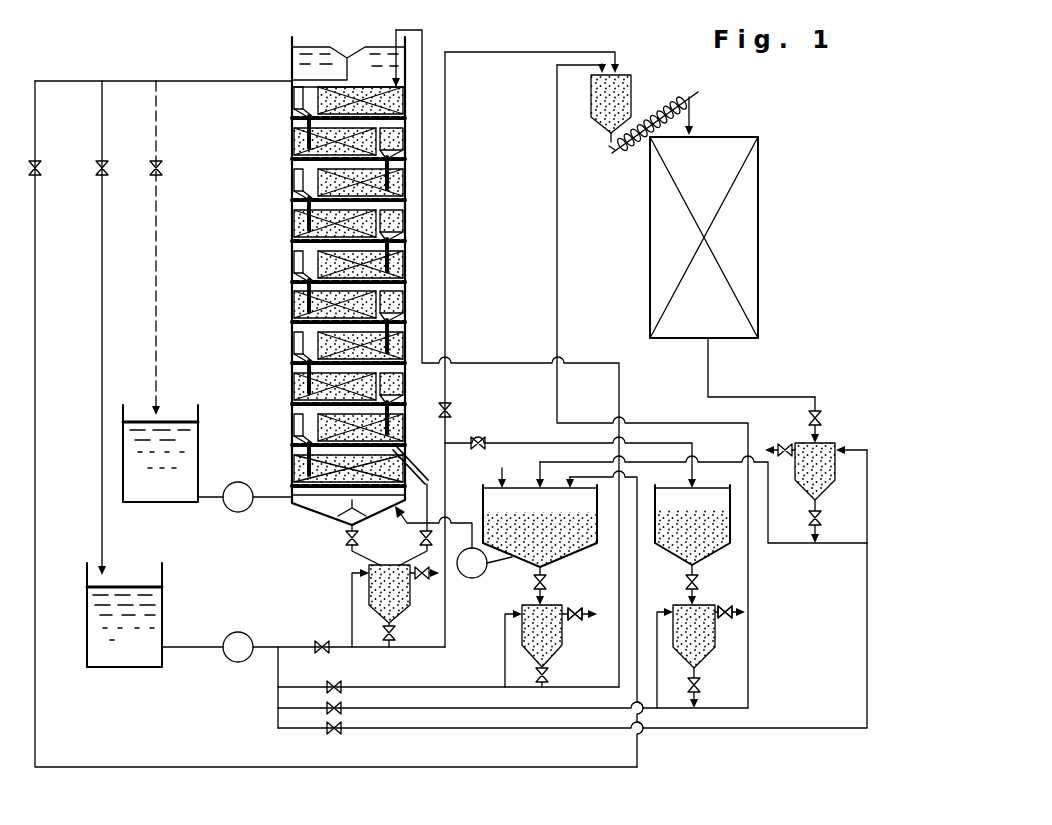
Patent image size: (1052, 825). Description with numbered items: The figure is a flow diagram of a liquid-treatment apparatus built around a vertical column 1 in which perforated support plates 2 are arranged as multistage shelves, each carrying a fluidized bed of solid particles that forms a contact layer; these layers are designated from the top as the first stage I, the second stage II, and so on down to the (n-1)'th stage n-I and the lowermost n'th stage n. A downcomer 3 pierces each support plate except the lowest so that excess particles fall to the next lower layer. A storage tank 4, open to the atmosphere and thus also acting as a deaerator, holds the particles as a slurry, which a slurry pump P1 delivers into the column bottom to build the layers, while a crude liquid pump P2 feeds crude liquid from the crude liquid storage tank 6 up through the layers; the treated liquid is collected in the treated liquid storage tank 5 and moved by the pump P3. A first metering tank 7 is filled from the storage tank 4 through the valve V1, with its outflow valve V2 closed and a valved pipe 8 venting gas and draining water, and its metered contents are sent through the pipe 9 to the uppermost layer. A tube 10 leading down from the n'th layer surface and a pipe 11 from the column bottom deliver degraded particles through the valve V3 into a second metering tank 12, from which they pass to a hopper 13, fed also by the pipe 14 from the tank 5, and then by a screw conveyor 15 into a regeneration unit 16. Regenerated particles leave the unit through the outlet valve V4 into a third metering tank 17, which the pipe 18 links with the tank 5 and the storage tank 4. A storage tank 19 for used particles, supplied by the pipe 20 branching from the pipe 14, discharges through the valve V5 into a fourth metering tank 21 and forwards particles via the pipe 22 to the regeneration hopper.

The first stage contact layer I is at (293, 103).
The second stage contact layer II is at (293, 146).
The vertical column 1 is at (293, 262).
The support plate 2 is at (293, 222).
The downcomer 3 is at (293, 185).
The (n-1)'th stage contact layer n-I is at (293, 422).
The n'th stage contact layer n is at (293, 465).
The storage tank 4 is at (483, 505).
The treated liquid storage tank 5 is at (160, 630).
The crude liquid storage tank 6 is at (193, 456).
The first metering tank 7 is at (552, 645).
The valved pipe 8 is at (582, 612).
The pipe 9 is at (486, 692).
The tube 10 is at (419, 474).
The pipe 11 is at (346, 545).
The second metering tank 12 is at (398, 612).
The hopper 13 is at (600, 118).
The pipe 14 is at (302, 642).
The screw conveyor 15 is at (665, 103).
The regeneration unit 16 is at (646, 233).
The third metering tank 17 is at (803, 484).
The pipe 18 is at (412, 730).
The storage tank for used solid particles 19 is at (673, 547).
The pipe 20 is at (507, 443).
The fourth metering tank 21 is at (703, 645).
The pipe 22 is at (448, 710).
The slurry pump P1 is at (472, 578).
The crude liquid pump P2 is at (238, 513).
The treated liquid transfer pump P3 is at (238, 662).
The valve V1 is at (534, 583).
The outflow valve V2 is at (537, 675).
The valve V3 is at (418, 540).
The outlet valve V4 is at (822, 418).
The valve V5 is at (705, 582).